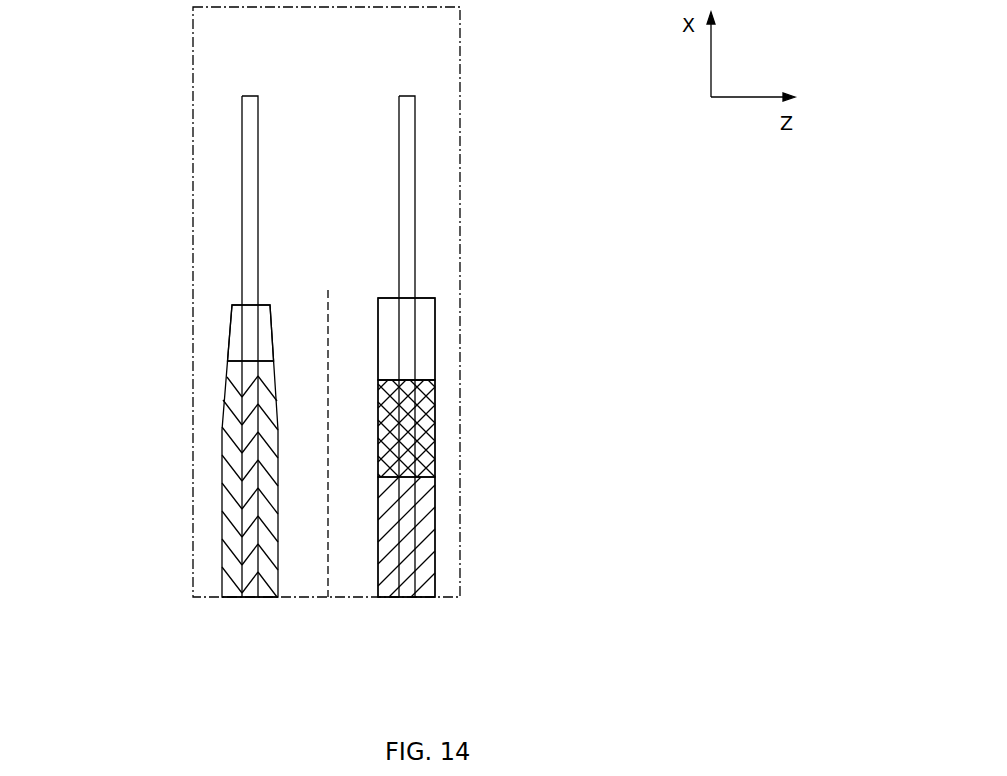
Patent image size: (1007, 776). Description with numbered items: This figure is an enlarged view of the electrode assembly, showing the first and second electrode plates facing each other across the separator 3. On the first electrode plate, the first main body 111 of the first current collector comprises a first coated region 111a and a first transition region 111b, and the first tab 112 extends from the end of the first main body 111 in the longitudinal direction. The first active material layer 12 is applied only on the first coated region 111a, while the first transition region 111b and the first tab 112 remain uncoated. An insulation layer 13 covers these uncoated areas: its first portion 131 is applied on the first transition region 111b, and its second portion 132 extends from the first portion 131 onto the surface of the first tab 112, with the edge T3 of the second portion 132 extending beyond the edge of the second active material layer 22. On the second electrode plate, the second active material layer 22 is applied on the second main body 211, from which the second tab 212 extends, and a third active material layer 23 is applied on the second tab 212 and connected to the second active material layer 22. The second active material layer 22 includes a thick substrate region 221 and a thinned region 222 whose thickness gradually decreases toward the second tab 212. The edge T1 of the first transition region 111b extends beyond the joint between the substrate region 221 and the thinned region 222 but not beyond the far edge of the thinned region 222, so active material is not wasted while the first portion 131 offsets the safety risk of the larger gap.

The separator 3 is at (328, 562).
The first active material layer 12 is at (378, 580).
The insulation layer 13 is at (482, 349).
The first portion 131 is at (430, 400).
The second portion 132 is at (428, 345).
The first main body 111 is at (494, 488).
The first coated region 111a is at (432, 540).
The first transition region 111b is at (432, 428).
The first tab 112 is at (405, 141).
The edge of the first transition region T1 is at (408, 380).
The edge of the second portion T3 is at (390, 298).
The second active material layer 22 is at (166, 318).
The substrate region 221 is at (230, 508).
The thinned region 222 is at (228, 398).
The third active material layer 23 is at (237, 308).
The second main body 211 is at (250, 598).
The second tab 212 is at (250, 122).